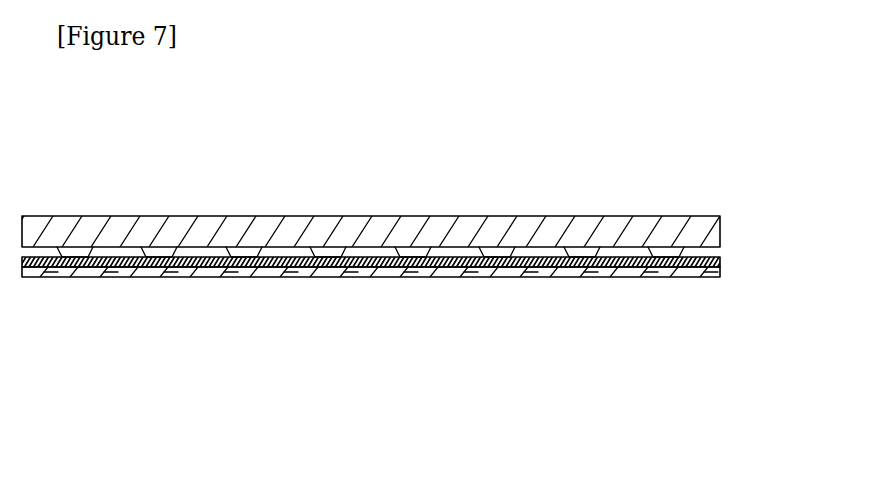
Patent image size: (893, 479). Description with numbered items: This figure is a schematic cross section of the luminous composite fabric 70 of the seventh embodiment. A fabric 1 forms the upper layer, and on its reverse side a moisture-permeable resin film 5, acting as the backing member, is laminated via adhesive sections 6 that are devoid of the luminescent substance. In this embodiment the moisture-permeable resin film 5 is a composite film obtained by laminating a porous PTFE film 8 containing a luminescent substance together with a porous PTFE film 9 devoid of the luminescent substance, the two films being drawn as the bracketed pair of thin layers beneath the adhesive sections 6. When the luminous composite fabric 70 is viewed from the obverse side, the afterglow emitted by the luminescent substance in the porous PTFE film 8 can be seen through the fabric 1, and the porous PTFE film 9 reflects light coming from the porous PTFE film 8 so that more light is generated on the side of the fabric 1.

The luminous composite fabric 70 is at (666, 153).
The fabric 1 is at (188, 229).
The adhesive sections 6 is at (317, 268).
The moisture-permeable resin film 5 is at (417, 307).
The porous PTFE film containing a luminescent substance 8 is at (182, 278).
The porous PTFE film devoid of the luminescent substance 9 is at (103, 278).